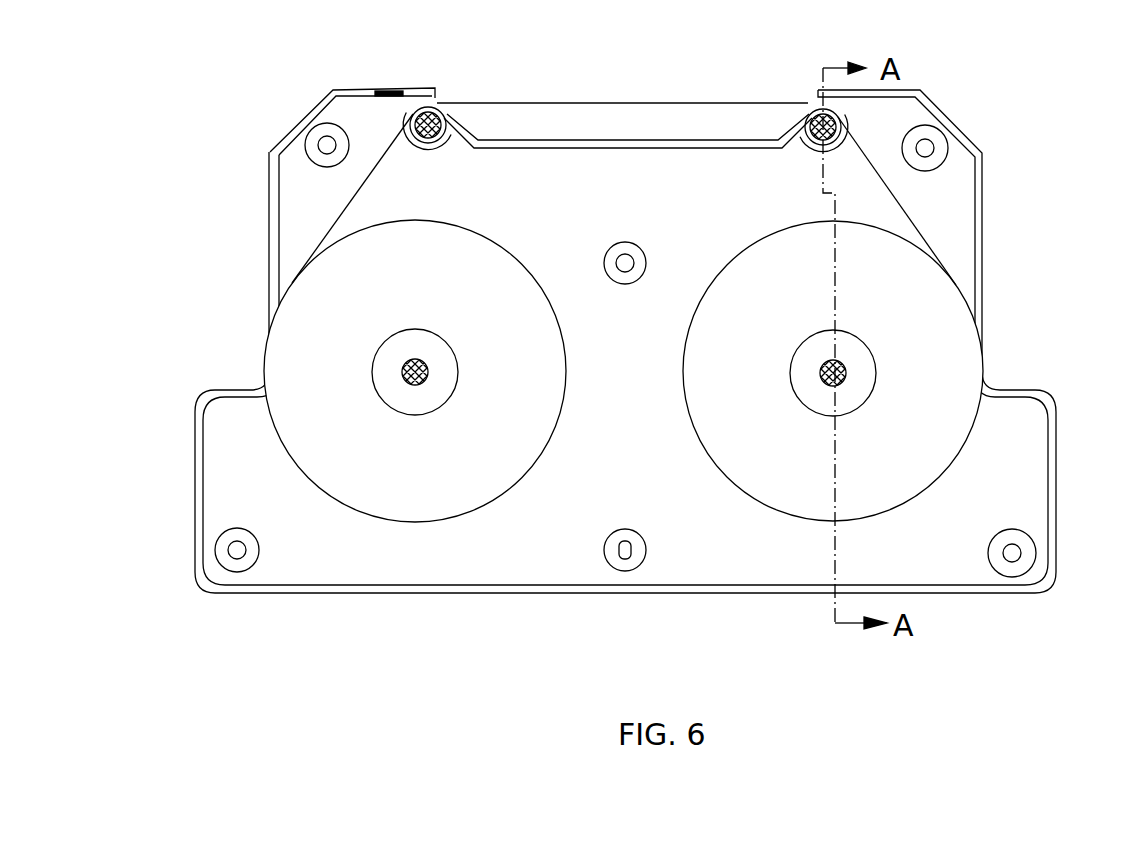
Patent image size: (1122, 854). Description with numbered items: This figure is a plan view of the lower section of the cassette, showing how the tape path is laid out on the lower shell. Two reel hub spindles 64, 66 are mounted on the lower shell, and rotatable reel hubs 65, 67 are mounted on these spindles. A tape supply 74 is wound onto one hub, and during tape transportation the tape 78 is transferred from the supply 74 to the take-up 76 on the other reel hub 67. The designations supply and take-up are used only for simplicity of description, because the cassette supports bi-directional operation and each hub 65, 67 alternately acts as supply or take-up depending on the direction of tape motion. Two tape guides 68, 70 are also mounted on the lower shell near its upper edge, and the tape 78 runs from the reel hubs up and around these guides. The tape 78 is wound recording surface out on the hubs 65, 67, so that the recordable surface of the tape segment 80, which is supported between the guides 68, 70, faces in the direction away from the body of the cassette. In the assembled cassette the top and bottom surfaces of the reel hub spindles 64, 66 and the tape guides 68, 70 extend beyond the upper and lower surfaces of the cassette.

The reel hub spindle 64 is at (408, 366).
The reel hub 65 is at (372, 372).
The reel hub spindle 66 is at (840, 368).
The reel hub 67 is at (876, 385).
The tape guide 68 is at (428, 122).
The tape guide 70 is at (813, 117).
The tape supply 74 is at (400, 468).
The take-up 76 is at (755, 458).
The tape 78 is at (363, 183).
The tape segment 80 is at (638, 103).